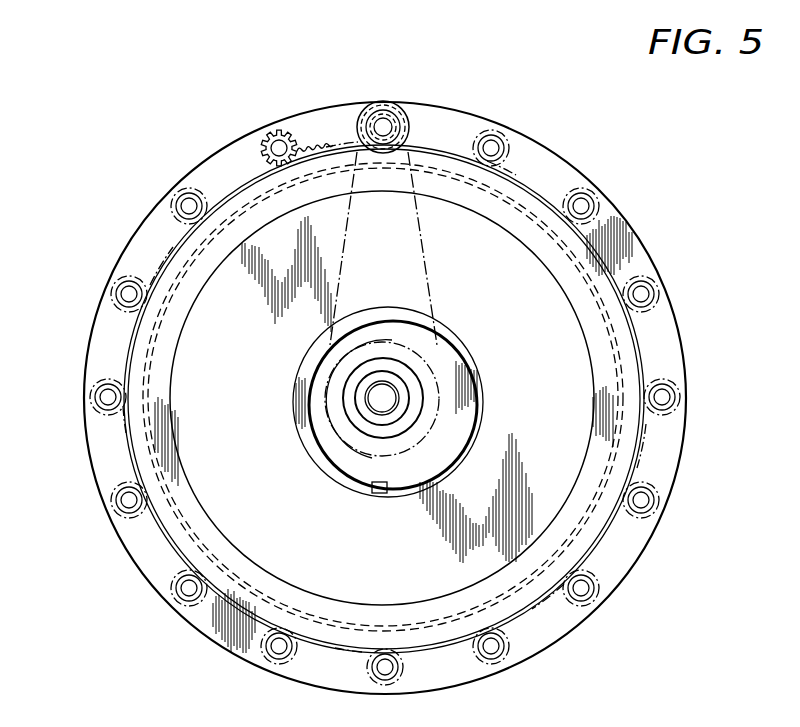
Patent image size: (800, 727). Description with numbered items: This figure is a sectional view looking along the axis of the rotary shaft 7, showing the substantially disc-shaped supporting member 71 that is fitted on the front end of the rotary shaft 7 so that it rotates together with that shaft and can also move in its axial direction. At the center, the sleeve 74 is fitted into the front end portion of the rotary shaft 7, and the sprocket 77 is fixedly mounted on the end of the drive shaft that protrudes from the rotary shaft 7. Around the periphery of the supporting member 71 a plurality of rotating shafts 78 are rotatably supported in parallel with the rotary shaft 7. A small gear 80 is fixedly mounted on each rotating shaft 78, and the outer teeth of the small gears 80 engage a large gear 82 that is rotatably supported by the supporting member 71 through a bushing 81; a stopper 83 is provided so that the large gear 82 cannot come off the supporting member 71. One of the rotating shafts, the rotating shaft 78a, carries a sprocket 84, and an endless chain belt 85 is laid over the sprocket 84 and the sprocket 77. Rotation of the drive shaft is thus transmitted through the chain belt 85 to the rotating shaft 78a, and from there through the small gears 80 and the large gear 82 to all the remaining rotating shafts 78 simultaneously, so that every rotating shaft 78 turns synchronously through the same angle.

The rotary shaft 7 is at (446, 340).
The supporting member 71 is at (641, 258).
The sleeve 74 is at (455, 383).
The sprocket 77 is at (427, 418).
The rotating shafts 78 is at (268, 148).
The rotating shaft 78a is at (392, 129).
The small gear 80 is at (358, 118).
The bushing 81 is at (536, 224).
The large gear 82 is at (532, 193).
The stopper 83 is at (553, 266).
The sprocket 84 is at (383, 101).
The endless chain belt 85 is at (343, 250).